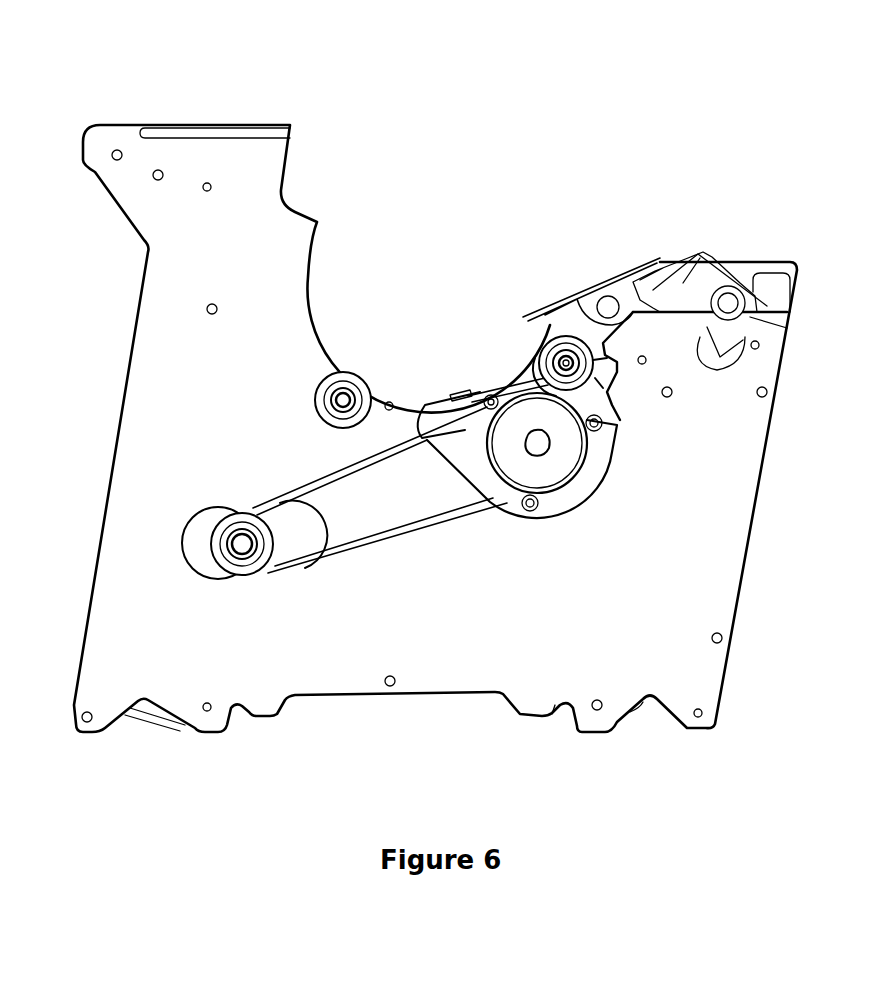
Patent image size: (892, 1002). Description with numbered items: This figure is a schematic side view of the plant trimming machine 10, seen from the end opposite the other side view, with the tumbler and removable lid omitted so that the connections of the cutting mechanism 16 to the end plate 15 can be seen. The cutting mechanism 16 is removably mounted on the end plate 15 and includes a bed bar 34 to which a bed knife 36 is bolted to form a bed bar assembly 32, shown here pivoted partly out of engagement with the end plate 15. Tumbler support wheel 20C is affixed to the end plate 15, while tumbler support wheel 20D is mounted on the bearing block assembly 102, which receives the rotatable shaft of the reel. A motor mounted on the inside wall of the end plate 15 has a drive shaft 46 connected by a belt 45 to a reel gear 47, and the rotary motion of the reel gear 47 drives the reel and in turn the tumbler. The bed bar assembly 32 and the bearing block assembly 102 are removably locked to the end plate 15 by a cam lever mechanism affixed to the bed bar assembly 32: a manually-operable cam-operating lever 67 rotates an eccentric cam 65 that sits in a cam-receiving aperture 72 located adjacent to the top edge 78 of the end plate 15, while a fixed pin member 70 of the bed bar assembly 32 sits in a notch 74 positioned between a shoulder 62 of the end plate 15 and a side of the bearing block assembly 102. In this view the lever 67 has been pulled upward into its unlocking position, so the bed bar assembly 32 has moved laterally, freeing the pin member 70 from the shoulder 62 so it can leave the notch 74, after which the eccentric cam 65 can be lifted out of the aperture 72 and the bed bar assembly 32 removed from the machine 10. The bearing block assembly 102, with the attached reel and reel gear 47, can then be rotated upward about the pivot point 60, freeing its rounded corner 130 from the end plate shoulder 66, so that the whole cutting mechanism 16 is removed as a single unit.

The plant trimming machine 10 is at (406, 115).
The end plate 15 is at (138, 513).
The cutting mechanism 16 is at (634, 200).
The tumbler support wheel 20C is at (344, 398).
The tumbler support wheel 20D is at (563, 342).
The bed bar assembly 32 is at (675, 240).
The bed bar 34 is at (792, 264).
The bed knife 36 is at (523, 316).
The belt 45 is at (394, 533).
The drive shaft 46 is at (237, 568).
The reel gear 47 is at (567, 458).
The pivot point 60 is at (413, 415).
The shoulder 62 is at (607, 345).
The eccentric cam 65 is at (780, 330).
The shoulder 66 is at (423, 400).
The cam-operating lever 67 is at (683, 283).
The fixed pin member 70 is at (608, 296).
The cam-receiving aperture 72 is at (700, 375).
The notch 74 is at (617, 366).
The top edge 78 is at (776, 319).
The bearing block assembly 102 is at (540, 535).
The rounded corner 130 is at (450, 390).